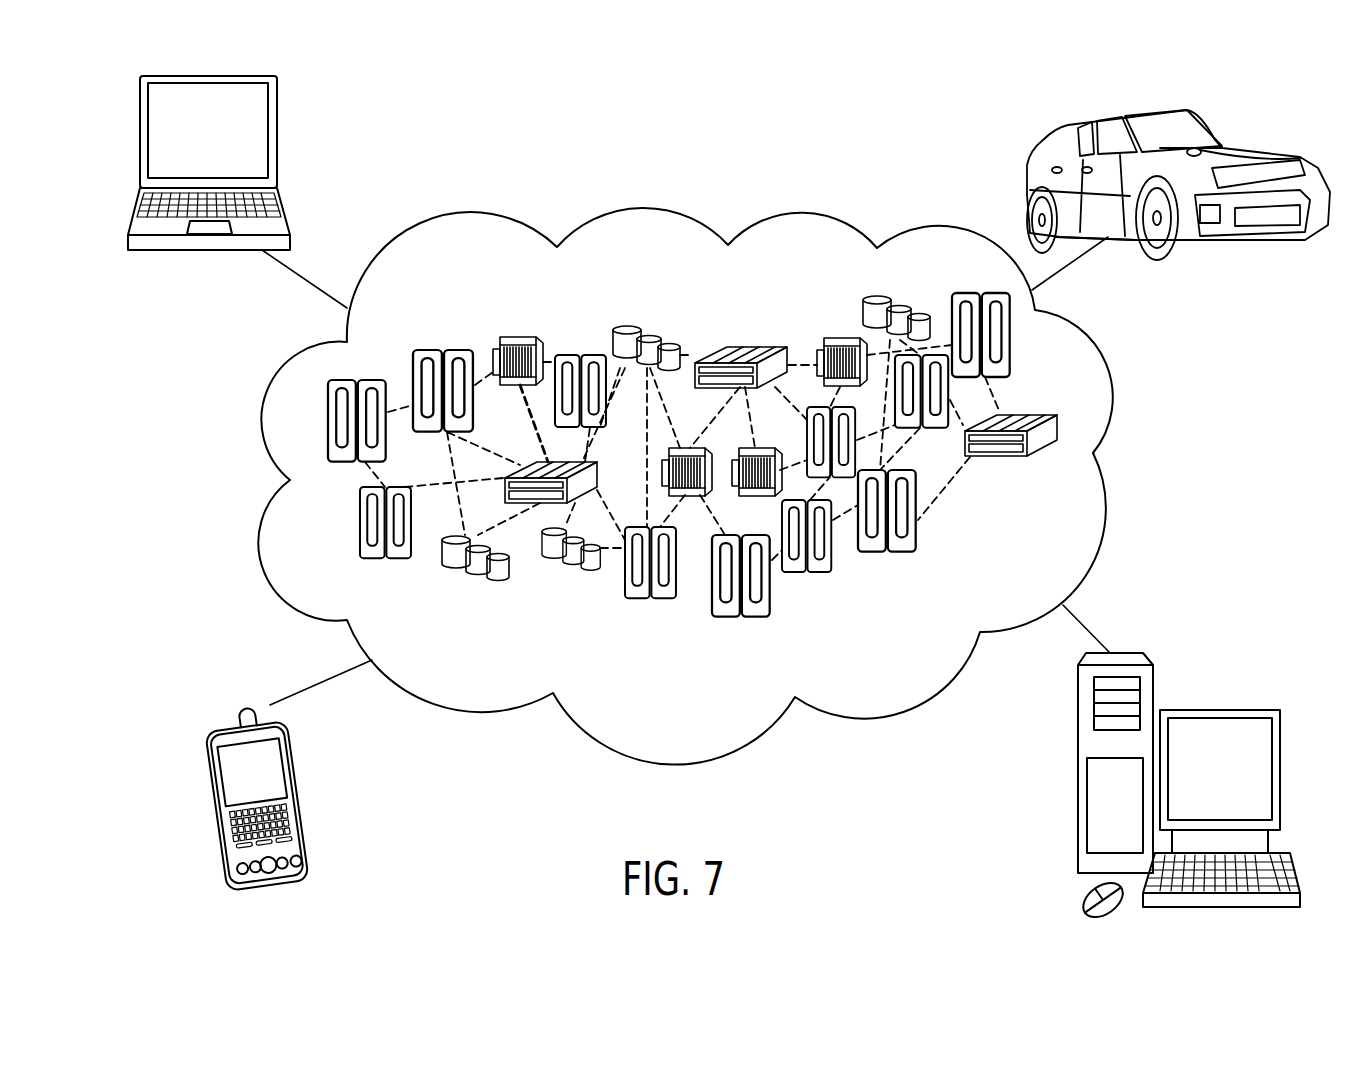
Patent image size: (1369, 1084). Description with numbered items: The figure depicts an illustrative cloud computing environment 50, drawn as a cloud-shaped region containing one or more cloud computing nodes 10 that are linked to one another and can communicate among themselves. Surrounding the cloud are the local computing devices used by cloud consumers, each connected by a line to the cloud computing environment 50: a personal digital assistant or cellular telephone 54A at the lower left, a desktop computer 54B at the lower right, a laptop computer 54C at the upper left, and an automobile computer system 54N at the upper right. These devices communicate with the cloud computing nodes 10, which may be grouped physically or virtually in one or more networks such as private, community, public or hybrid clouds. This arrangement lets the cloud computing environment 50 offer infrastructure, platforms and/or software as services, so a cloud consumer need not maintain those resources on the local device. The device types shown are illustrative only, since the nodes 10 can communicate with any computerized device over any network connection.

The cloud computing node 10 is at (1080, 514).
The cloud computing environment 50 is at (1108, 393).
The personal digital assistant (PDA) or cellular telephone 54A is at (208, 808).
The desktop computer 54B is at (1213, 710).
The laptop computer 54C is at (140, 138).
The automobile computer system 54N is at (1232, 135).